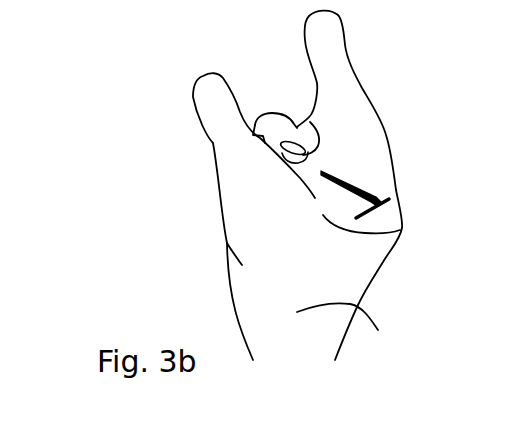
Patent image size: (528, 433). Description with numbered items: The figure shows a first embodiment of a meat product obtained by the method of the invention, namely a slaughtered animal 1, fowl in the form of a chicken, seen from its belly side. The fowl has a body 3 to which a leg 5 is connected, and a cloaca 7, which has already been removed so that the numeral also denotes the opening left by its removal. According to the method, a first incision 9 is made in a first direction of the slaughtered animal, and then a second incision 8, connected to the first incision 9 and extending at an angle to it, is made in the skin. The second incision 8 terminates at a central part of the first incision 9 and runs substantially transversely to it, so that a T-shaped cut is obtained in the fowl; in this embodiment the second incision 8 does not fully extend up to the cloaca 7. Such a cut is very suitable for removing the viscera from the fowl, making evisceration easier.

The slaughtered animal 1 is at (148, 232).
The body 3 is at (378, 330).
The leg 5 is at (217, 107).
The cloaca 7 is at (310, 122).
The second incision 8 is at (347, 180).
The first incision 9 is at (378, 220).